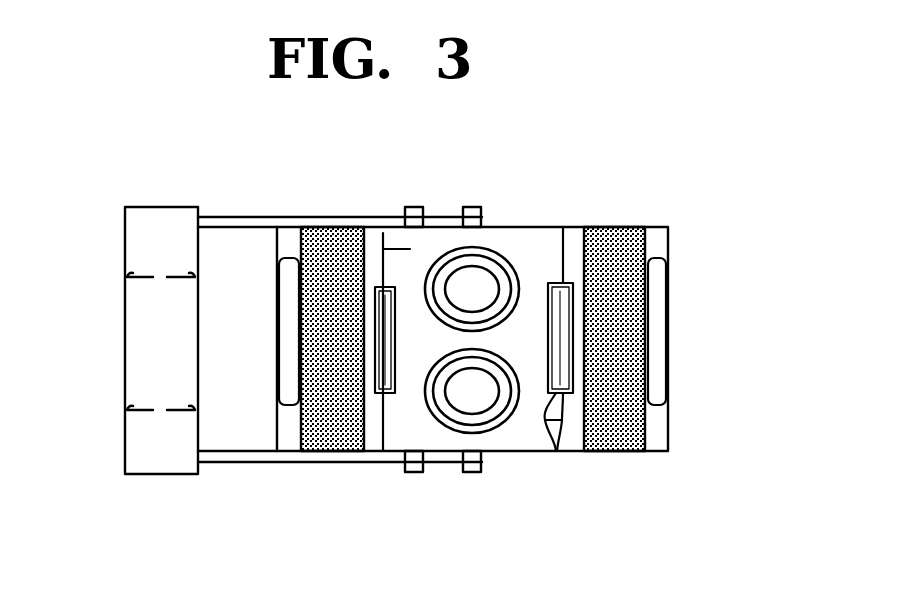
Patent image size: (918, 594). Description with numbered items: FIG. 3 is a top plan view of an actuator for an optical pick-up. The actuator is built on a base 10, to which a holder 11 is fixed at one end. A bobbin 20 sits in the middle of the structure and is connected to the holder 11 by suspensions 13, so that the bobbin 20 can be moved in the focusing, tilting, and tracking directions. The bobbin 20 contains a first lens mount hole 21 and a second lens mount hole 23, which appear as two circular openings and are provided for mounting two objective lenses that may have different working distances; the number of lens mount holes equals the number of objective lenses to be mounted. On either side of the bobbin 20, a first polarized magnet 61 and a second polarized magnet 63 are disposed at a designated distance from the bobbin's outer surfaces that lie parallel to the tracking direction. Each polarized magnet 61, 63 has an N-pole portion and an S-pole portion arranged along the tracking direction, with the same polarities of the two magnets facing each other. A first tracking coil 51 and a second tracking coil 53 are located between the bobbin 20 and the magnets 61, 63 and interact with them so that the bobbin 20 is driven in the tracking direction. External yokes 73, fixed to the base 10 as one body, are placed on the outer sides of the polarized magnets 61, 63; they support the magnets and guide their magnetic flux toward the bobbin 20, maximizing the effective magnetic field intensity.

The base 10 is at (230, 240).
The holder 11 is at (150, 462).
The suspensions 13 is at (349, 465).
The bobbin 20 is at (538, 237).
The first lens mount hole 21 is at (466, 268).
The second lens mount hole 23 is at (478, 400).
The first tracking coil 51 is at (553, 451).
The second tracking coil 53 is at (385, 397).
The first polarized magnet 61 is at (618, 232).
The second polarized magnet 63 is at (327, 233).
The external yokes 73 is at (290, 440).